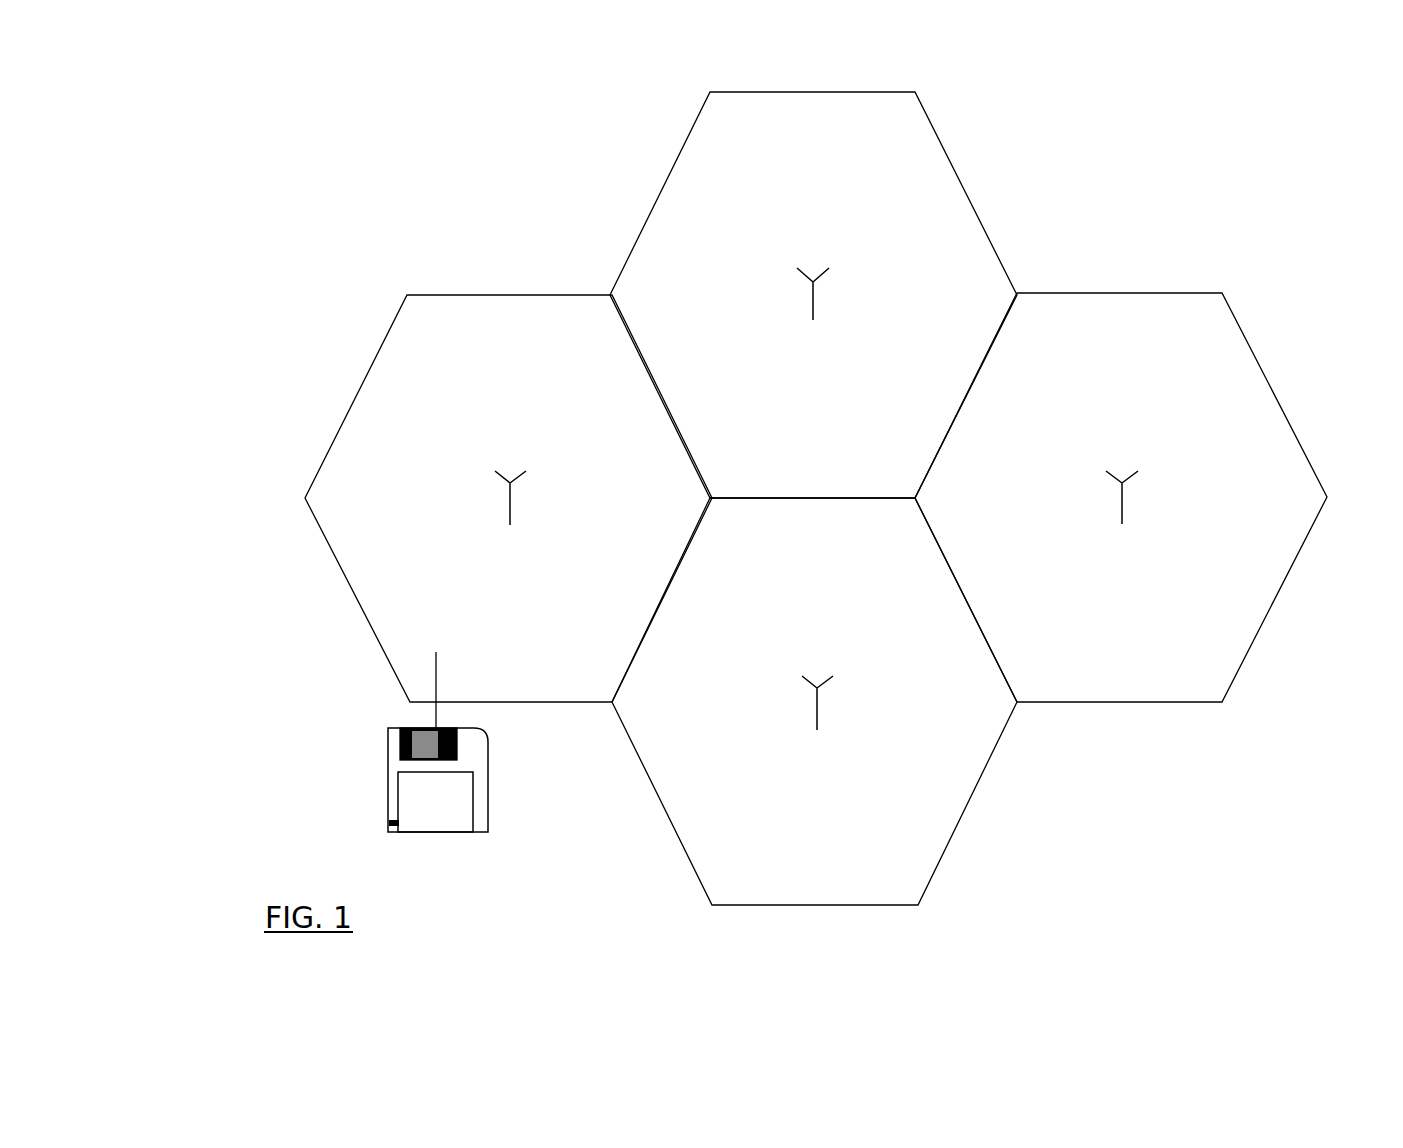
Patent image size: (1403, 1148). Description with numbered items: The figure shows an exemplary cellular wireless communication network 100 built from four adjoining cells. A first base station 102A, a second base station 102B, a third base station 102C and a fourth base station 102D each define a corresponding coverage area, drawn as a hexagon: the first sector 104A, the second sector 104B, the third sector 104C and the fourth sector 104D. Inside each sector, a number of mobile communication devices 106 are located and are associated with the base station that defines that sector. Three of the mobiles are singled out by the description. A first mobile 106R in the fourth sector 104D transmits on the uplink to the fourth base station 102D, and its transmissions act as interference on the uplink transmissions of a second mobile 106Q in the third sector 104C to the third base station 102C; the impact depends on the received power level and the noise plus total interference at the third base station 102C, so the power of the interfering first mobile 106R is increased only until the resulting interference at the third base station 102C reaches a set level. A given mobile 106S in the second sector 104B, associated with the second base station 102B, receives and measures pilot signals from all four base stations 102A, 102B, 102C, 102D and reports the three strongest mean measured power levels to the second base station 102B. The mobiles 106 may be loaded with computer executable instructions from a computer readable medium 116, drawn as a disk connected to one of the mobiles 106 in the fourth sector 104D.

The cellular wireless communication network 100 is at (302, 231).
The first base station 102A is at (808, 276).
The second base station 102B is at (1118, 476).
The third base station 102C is at (812, 683).
The fourth base station 102D is at (506, 477).
The first sector 104A is at (967, 188).
The second sector 104B is at (1278, 390).
The third sector 104C is at (972, 806).
The fourth sector 104D is at (353, 395).
The mobile communication device 106 is at (895, 203).
The second mobile 106Q is at (789, 561).
The first mobile 106R is at (662, 534).
The given mobile 106S is at (1017, 509).
The computer readable medium 116 is at (454, 813).